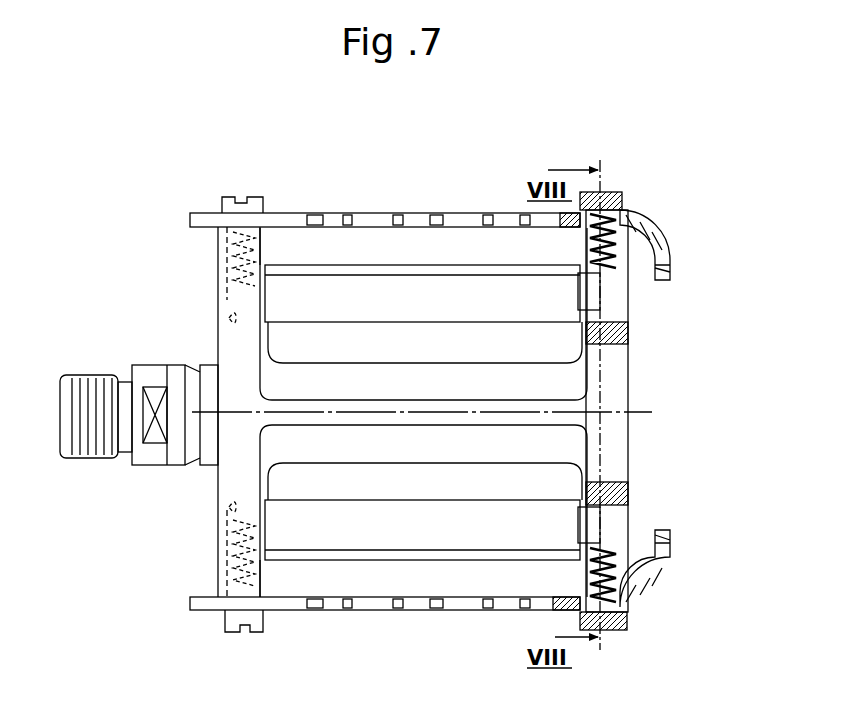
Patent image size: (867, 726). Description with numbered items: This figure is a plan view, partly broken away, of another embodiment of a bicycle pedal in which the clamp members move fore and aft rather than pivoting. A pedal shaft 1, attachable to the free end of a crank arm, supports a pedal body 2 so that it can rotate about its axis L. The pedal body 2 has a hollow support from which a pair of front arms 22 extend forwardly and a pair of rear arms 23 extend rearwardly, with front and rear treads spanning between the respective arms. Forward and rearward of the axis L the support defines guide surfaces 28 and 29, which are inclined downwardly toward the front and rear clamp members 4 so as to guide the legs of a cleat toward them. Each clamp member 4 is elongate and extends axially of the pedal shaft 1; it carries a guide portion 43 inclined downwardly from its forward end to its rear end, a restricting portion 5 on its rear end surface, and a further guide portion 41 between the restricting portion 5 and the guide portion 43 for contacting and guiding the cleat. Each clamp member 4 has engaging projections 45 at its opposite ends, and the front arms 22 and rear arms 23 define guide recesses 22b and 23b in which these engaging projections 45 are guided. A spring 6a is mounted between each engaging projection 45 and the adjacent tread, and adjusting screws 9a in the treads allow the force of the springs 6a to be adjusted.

The pedal shaft 1 is at (85, 377).
The pedal body 2 is at (632, 467).
The clamp member 4 is at (499, 260).
The restricting portion 5 is at (306, 326).
The spring 6a is at (218, 256).
The adjusting screw 9a is at (235, 197).
The front arm 22 is at (218, 232).
The guide recess 22b is at (225, 325).
The rear arm 23 is at (218, 585).
The guide recess 23b is at (235, 500).
The guide surface 28 is at (463, 372).
The guide surface 29 is at (463, 450).
The guide portion 41 is at (345, 322).
The guide portion 43 is at (418, 305).
The engaging projection 45 is at (228, 290).
The axis L is at (432, 407).